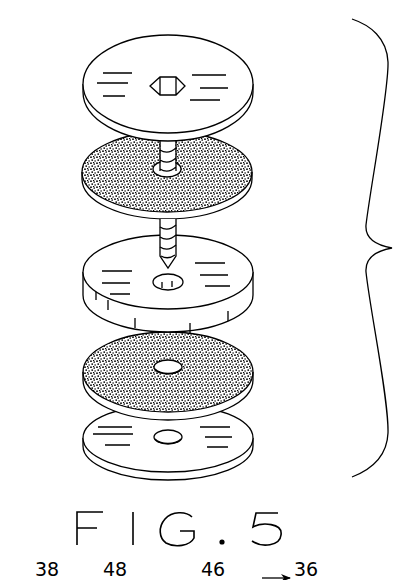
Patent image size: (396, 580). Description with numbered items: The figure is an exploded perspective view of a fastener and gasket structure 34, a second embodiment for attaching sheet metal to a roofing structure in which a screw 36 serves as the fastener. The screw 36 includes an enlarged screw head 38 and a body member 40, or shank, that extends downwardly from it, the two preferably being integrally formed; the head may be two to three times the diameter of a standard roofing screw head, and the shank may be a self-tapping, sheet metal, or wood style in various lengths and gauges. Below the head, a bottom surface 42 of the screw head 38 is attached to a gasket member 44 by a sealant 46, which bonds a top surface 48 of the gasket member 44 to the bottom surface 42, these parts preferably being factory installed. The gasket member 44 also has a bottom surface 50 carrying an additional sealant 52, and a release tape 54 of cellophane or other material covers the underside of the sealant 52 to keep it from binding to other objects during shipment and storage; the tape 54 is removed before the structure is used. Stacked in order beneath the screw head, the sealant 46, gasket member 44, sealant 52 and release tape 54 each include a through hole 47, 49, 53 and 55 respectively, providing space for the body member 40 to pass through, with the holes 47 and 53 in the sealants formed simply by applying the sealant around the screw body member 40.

The fastener and gasket structure 34 is at (300, 185).
The screw 36 is at (203, 83).
The screw head 38 is at (118, 72).
The body member 40 is at (185, 231).
The bottom surface 42 is at (243, 120).
The gasket member 44 is at (207, 284).
The sealant 46 is at (105, 157).
The through hole 47 is at (157, 175).
The top surface 48 is at (118, 267).
The through hole 49 is at (163, 288).
The bottom surface 50 is at (235, 322).
The sealant 52 is at (248, 360).
The through hole 53 is at (167, 370).
The release tape 54 is at (232, 433).
The through hole 55 is at (167, 438).